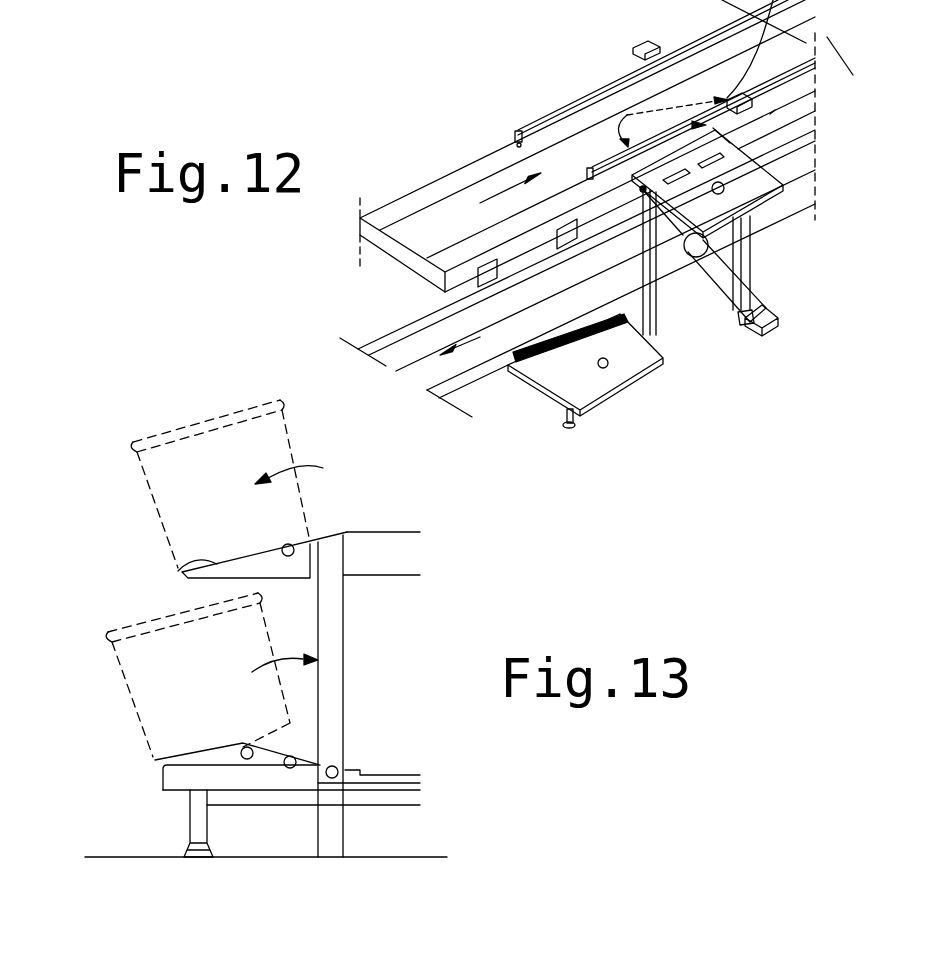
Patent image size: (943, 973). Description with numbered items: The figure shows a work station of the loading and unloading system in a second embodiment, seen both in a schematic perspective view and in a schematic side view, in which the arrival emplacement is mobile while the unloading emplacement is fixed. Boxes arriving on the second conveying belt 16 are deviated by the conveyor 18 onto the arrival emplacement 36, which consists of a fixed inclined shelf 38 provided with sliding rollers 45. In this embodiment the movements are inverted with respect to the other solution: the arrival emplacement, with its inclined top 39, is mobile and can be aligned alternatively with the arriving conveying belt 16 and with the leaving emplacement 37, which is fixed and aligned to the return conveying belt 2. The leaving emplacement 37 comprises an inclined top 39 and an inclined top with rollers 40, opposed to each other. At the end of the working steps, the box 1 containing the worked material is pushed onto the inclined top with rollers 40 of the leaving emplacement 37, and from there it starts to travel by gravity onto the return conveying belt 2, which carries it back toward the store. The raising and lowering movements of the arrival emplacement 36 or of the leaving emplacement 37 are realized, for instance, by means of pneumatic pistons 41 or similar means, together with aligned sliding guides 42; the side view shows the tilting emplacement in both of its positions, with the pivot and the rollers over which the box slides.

In FIG. 13, the box 1 is at (203, 460).
In FIG. 12, the return conveying belt 2 is at (410, 368).
In FIG. 13, the return conveying belt 2 is at (393, 773).
In FIG. 12, the second conveying belt 16 is at (705, 72).
In FIG. 13, the second conveying belt 16 is at (407, 532).
In FIG. 12, the conveyor 18 is at (598, 90).
In FIG. 12, the arrival emplacement 36 is at (760, 210).
In FIG. 13, the arrival emplacement 36 is at (177, 568).
In FIG. 12, the leaving emplacement 37 is at (632, 392).
In FIG. 12, the fixed inclined shelf 38 is at (747, 182).
In FIG. 12, the inclined top 39 is at (573, 424).
In FIG. 13, the inclined top 39 is at (157, 760).
In FIG. 12, the inclined top with rollers 40 is at (538, 360).
In FIG. 13, the inclined top with rollers 40 is at (288, 757).
In FIG. 12, the pneumatic pistons 41 is at (745, 327).
In FIG. 12, the aligned sliding guides 42 is at (778, 325).
In FIG. 12, the sliding rollers 45 is at (775, 110).
In FIG. 13, the sliding rollers 45 is at (289, 545).